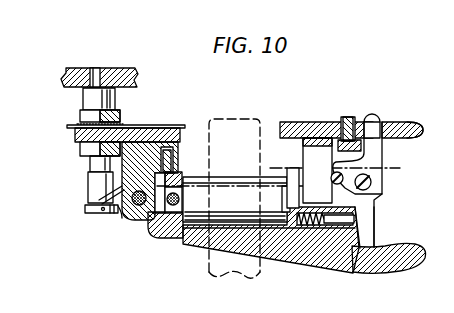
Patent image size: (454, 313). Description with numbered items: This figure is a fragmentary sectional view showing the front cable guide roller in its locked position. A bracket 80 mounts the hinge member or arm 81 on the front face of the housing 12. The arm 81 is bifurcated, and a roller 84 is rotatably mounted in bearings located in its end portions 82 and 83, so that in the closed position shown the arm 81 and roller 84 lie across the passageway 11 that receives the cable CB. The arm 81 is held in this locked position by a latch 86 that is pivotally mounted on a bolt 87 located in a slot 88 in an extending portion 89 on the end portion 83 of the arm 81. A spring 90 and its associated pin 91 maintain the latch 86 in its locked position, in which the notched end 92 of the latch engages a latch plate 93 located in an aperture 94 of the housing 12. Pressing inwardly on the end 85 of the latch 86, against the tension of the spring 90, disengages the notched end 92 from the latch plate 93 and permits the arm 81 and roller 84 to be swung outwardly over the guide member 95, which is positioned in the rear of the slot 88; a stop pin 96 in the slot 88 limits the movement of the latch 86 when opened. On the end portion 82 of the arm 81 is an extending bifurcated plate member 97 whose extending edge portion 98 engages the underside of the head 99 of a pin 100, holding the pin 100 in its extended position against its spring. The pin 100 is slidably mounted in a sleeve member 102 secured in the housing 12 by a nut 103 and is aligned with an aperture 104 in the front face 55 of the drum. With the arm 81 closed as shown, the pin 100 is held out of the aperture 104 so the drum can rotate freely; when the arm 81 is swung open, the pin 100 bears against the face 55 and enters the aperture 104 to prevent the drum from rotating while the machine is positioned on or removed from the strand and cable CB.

The front face 55 is at (129, 68).
The aperture 104 is at (98, 67).
The sleeve member 102 is at (84, 99).
The bracket 80 is at (137, 150).
The nut 103 is at (82, 147).
The pin 100 is at (89, 180).
The extending edge portion 98 is at (100, 191).
The head 99 is at (85, 210).
The bifurcated plate member 97 is at (123, 213).
The end portion 82 is at (151, 234).
The end portion 83 is at (291, 240).
The roller 84 is at (193, 178).
The cable CB is at (232, 125).
The passageway 11 is at (266, 131).
The extending portion 89 is at (296, 174).
The guide member 95 is at (313, 152).
The housing 12 is at (318, 124).
The aperture 94 is at (389, 124).
The latch plate 93 is at (348, 138).
The notched end 92 is at (375, 121).
The latch 86 is at (380, 177).
The slot 88 is at (376, 193).
The bolt 87 is at (366, 177).
The stop pin 96 is at (334, 182).
The spring 90 is at (310, 226).
The pin 91 is at (338, 224).
The end 85 is at (368, 232).
The hinge member or arm 81 is at (372, 271).